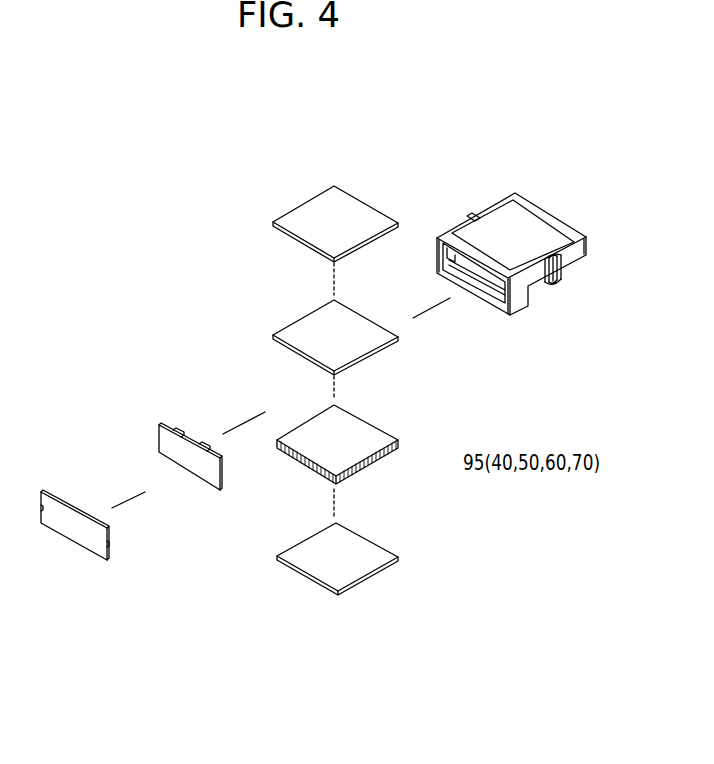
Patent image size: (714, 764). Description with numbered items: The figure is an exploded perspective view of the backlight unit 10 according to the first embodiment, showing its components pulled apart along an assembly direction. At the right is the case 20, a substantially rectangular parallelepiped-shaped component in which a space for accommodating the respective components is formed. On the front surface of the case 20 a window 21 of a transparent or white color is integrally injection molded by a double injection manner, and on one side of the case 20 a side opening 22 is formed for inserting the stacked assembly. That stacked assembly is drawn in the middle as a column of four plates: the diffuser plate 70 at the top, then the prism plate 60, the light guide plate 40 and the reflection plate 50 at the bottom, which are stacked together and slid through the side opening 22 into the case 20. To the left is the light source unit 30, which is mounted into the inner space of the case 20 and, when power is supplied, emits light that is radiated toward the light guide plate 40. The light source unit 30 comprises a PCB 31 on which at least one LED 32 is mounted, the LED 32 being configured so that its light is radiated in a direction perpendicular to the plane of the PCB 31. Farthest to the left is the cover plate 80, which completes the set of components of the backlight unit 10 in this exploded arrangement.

The backlight unit 10 is at (134, 277).
The case 20 is at (527, 264).
The window 21 is at (533, 222).
The side opening 22 is at (492, 302).
The light source unit 30 is at (174, 445).
The PCB 31 is at (190, 462).
The LED 32 is at (207, 450).
The light guide plate 40 is at (355, 433).
The reflection plate 50 is at (355, 553).
The prism plate 60 is at (357, 328).
The diffuser plate 70 is at (357, 213).
The cover plate 80 is at (70, 530).